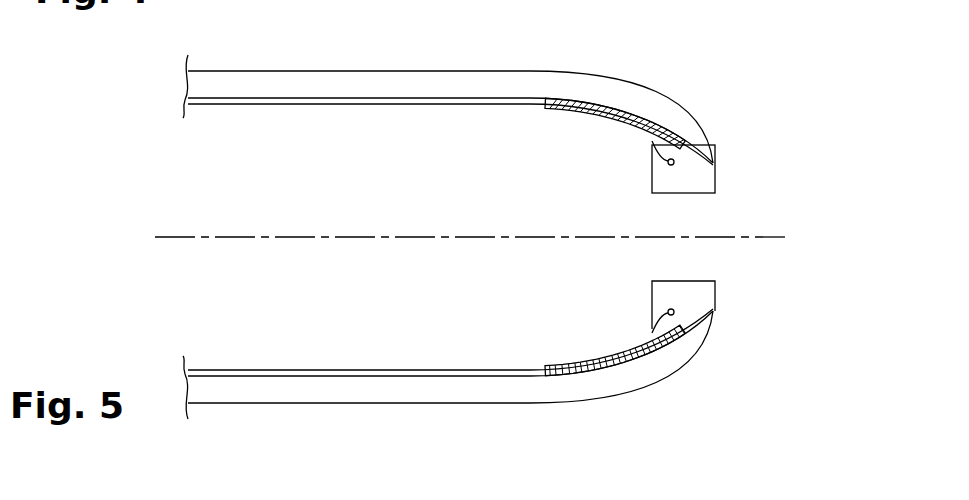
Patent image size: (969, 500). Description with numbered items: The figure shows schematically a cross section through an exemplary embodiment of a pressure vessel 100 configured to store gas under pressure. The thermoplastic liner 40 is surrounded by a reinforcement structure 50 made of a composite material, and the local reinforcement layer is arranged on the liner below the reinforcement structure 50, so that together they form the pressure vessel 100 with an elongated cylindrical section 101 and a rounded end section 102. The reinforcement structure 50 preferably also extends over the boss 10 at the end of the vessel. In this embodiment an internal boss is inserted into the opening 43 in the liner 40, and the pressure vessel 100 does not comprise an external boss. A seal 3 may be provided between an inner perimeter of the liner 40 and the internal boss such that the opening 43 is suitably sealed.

The reinforcement structure 50 is at (520, 87).
The thermoplastic liner 40 is at (274, 107).
The rounded end section 102 is at (656, 92).
The pressure vessel 100 is at (718, 93).
The seal 3 is at (663, 164).
The boss 10 is at (703, 175).
The elongated cylindrical section 101 is at (370, 407).
The opening 43 is at (695, 263).